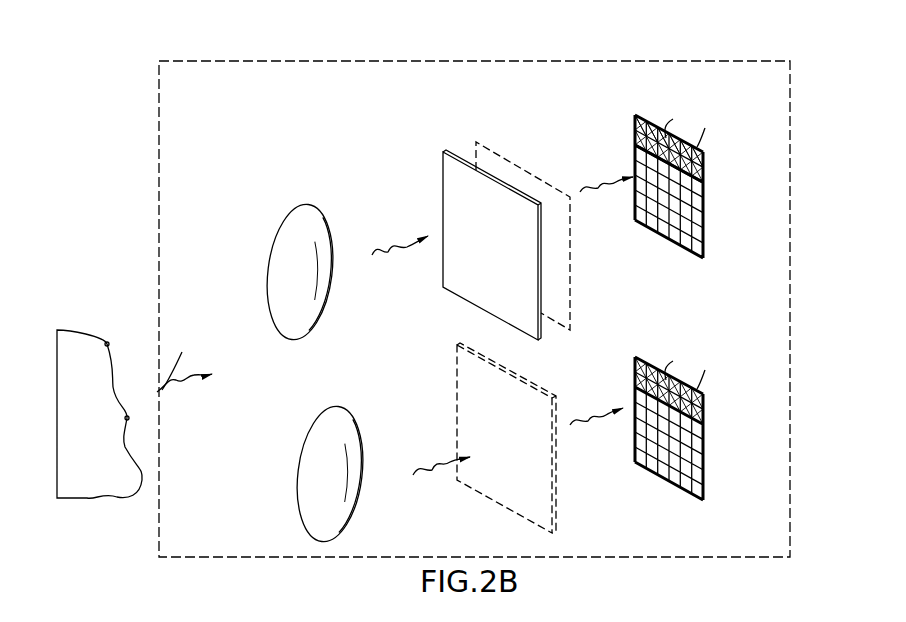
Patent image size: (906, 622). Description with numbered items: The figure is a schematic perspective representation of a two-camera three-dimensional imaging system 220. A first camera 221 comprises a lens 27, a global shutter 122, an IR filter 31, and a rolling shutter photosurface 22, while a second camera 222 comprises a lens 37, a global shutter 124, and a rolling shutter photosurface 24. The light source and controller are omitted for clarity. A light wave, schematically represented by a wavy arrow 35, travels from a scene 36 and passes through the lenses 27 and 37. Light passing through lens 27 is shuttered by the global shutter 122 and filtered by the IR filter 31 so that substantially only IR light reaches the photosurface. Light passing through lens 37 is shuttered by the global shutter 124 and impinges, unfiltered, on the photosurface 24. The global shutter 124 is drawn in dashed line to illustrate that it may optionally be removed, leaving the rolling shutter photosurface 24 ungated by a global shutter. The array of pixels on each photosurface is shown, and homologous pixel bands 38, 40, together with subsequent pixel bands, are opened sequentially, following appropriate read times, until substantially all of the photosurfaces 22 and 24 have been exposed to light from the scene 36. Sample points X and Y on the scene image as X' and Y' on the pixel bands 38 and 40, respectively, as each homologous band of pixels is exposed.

The 3D imaging system 220 is at (655, 45).
The first camera 221 is at (182, 130).
The second camera 222 is at (178, 513).
The scene 36 is at (83, 300).
The wavy arrow 35 is at (395, 332).
The lens 27 is at (314, 223).
The lens 37 is at (340, 422).
The global shutter 122 is at (443, 172).
The global shutter 124 is at (457, 388).
The IR filter 31 is at (570, 282).
The rolling shutter photosurface 22 is at (697, 106).
The rolling shutter photosurface 24 is at (699, 349).
The pixel band 38 is at (636, 133).
The pixel band 40 is at (636, 153).